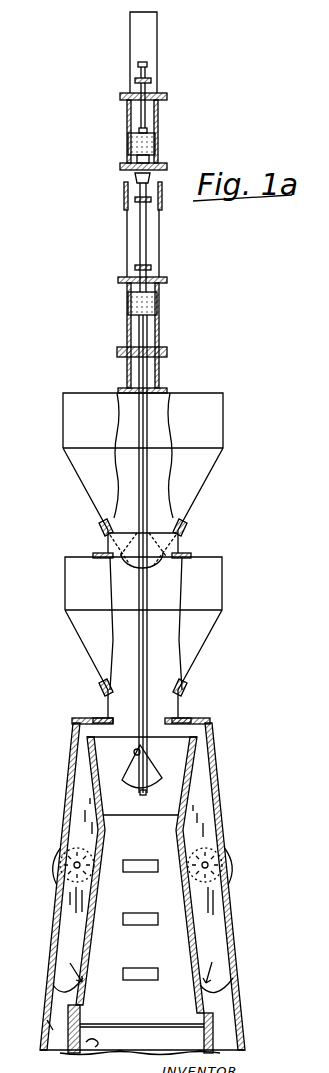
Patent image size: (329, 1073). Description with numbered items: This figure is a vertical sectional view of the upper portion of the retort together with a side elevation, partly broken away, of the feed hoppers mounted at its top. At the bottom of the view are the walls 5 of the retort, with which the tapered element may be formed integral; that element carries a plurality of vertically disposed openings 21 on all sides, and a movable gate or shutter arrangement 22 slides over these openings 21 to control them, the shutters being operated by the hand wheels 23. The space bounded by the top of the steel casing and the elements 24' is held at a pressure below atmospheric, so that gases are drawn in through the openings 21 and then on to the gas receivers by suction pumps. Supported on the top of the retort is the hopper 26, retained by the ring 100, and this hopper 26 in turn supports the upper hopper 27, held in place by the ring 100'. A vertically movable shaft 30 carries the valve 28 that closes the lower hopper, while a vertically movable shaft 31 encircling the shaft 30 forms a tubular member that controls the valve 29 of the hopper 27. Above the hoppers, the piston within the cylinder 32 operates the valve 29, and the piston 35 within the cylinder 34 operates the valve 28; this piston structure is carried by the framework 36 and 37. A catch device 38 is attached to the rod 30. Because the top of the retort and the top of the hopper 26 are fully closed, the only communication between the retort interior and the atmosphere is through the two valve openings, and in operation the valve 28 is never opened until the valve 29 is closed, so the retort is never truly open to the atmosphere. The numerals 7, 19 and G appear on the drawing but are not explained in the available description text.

The framework 37 is at (143, 43).
The catch device 38 is at (135, 83).
The cylinder 34 is at (128, 108).
The piston 35 is at (130, 142).
The cylinder 32 is at (160, 298).
The framework 36 is at (163, 370).
The vertically movable shaft 31 is at (150, 423).
The hopper 27 is at (190, 470).
The ring 100' is at (171, 531).
The valve 29 is at (130, 568).
The vertically movable shaft 30 is at (147, 618).
The hopper 26 is at (202, 637).
The ring 100 is at (177, 703).
The valve 28 is at (146, 779).
The hand wheel 23 is at (53, 870).
The right rotary feeder 19 is at (203, 918).
The vertically disposed openings 21 is at (108, 888).
The movable gate or shutter arrangement 22 is at (100, 944).
The elements 24' is at (166, 972).
The outer shell 7 is at (56, 1039).
The gas inlet G is at (41, 1023).
The walls of the retort 5 is at (97, 1042).